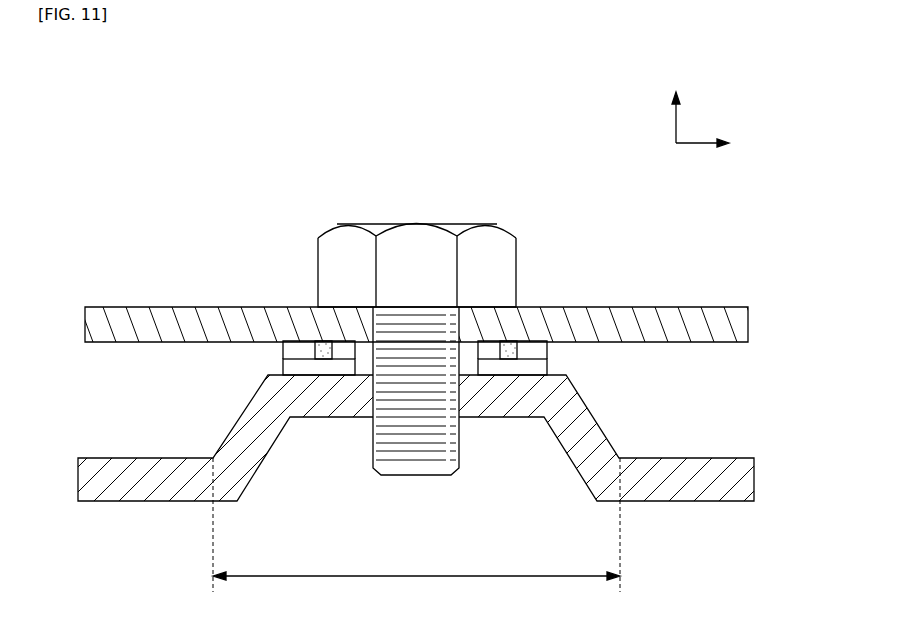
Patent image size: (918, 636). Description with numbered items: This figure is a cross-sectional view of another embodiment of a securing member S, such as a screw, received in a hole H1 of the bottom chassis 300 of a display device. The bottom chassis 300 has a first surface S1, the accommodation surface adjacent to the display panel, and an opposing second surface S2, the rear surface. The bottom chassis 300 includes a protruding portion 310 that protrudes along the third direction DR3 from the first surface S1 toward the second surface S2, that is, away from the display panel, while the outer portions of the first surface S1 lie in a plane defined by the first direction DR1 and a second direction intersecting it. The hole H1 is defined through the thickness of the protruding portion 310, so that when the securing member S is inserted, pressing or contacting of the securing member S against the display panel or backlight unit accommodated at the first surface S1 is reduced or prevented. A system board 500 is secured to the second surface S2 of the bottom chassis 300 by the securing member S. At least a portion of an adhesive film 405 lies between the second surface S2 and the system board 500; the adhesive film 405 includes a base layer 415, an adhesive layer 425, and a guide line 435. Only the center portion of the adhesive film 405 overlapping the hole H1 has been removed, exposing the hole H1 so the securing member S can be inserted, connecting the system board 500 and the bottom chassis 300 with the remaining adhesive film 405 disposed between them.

The securing member S is at (490, 255).
The first surface S1 is at (103, 504).
The second surface S2 is at (110, 458).
The hole H1 is at (463, 403).
The bottom chassis 300 is at (703, 477).
The protruding portion 310 is at (416, 525).
The adhesive film 405 is at (669, 251).
The base layer 415 is at (545, 357).
The adhesive layer 425 is at (549, 366).
The guide line 435 is at (509, 341).
The system board 500 is at (700, 323).
The first direction DR1 is at (727, 144).
The third direction DR3 is at (678, 105).